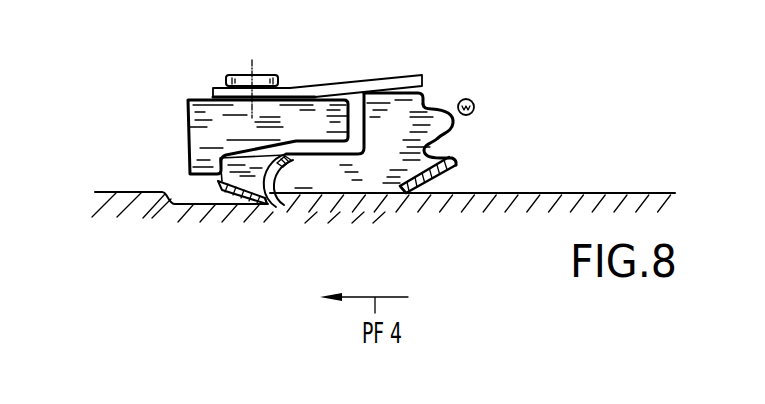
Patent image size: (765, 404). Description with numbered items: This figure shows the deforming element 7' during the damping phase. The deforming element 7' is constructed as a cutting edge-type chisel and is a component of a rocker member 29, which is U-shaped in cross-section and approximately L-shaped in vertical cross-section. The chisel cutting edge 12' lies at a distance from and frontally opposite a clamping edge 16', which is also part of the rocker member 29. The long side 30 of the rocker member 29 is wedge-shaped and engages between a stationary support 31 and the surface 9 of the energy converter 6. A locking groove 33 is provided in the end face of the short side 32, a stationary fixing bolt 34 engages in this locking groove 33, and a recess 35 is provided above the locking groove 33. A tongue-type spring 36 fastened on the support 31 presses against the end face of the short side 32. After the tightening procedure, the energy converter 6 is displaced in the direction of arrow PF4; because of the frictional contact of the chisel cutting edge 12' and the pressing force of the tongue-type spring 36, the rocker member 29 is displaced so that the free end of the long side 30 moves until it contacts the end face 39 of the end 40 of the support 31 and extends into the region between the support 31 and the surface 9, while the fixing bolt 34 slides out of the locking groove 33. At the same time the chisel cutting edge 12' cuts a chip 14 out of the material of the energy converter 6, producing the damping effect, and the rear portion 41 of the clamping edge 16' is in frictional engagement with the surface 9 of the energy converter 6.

The energy converter 6 is at (601, 185).
The surface of the energy converter 9 is at (121, 184).
The stationary support 31 is at (197, 115).
The tongue-type spring 36 is at (372, 81).
The short side 32 is at (402, 102).
The recess 35 is at (428, 105).
The locking groove 33 is at (443, 137).
The stationary fixing bolt 34 is at (473, 102).
The rear portion of the clamping edge 41 is at (446, 188).
The clamping edge 16' is at (425, 231).
The rocker member 29 is at (375, 200).
The chisel cutting edge 12' is at (288, 220).
The chip 14 is at (289, 165).
The end face 39 is at (213, 182).
The deforming element 7' is at (242, 238).
The long side 30 is at (253, 205).
The end of the support 40 is at (190, 160).